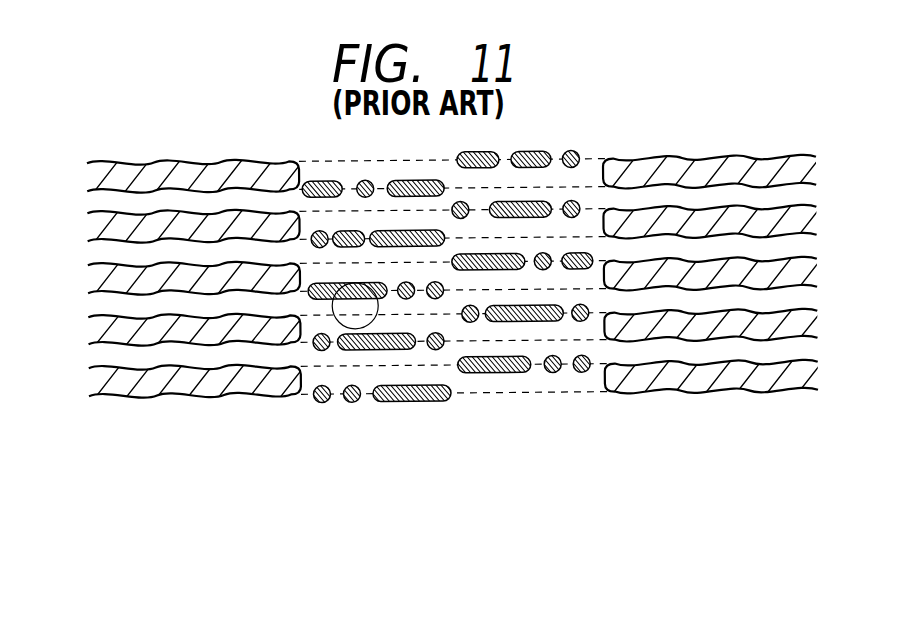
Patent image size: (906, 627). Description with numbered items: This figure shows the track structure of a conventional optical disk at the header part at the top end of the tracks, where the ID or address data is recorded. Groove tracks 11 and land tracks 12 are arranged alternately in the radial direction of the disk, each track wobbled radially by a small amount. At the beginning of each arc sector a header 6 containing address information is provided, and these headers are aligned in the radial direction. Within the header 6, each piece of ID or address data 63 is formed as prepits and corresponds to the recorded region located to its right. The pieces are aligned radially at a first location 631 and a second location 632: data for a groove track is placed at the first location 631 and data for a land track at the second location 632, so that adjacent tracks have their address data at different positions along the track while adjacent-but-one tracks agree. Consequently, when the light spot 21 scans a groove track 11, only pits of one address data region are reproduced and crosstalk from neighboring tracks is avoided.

The groove track 11 is at (92, 172).
The land track 12 is at (95, 201).
The light spot 21 is at (326, 366).
The header 6 is at (449, 337).
The ID or address data piece 63 is at (416, 181).
The first location 631 is at (363, 306).
The second location 632 is at (523, 321).